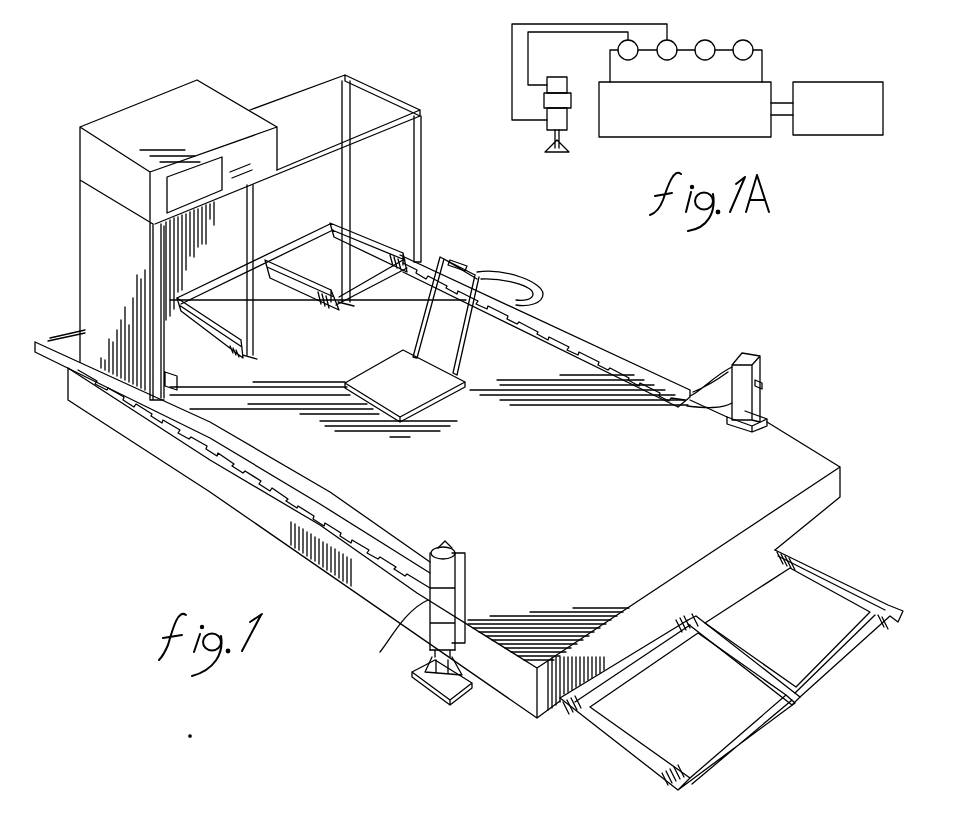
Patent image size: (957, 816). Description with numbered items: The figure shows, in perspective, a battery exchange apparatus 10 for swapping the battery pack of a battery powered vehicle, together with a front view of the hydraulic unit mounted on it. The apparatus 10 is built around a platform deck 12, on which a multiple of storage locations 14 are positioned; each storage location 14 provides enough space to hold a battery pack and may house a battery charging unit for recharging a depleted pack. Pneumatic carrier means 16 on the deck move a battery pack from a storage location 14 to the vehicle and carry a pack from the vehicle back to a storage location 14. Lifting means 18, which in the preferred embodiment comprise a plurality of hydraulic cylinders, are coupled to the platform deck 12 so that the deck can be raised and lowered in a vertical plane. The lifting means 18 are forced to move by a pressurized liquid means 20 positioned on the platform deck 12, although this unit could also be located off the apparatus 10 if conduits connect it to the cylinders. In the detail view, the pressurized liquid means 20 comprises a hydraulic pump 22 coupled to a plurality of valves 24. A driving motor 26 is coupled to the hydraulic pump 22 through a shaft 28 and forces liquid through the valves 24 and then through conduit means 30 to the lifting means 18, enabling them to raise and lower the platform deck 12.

In FIG. 1, the battery exchange apparatus 10 is at (588, 311).
In FIG. 1, the platform deck 12 is at (593, 387).
In FIG. 1, the storage locations 14 is at (372, 272).
In FIG. 1, the pneumatic carrier means 16 is at (378, 408).
In FIG. 1, the lifting means 18 is at (762, 383).
In FIG. 1A, the lifting means 18 is at (567, 113).
In FIG. 1, the pressurized liquid means 20 is at (171, 96).
In FIG. 1A, the pressurized liquid means 20 is at (793, 153).
In FIG. 1A, the hydraulic pump 22 is at (668, 125).
In FIG. 1A, the valves 24 is at (743, 40).
In FIG. 1A, the driving motor 26 is at (872, 48).
In FIG. 1A, the shaft 28 is at (782, 100).
In FIG. 1A, the conduit means 30 is at (527, 45).